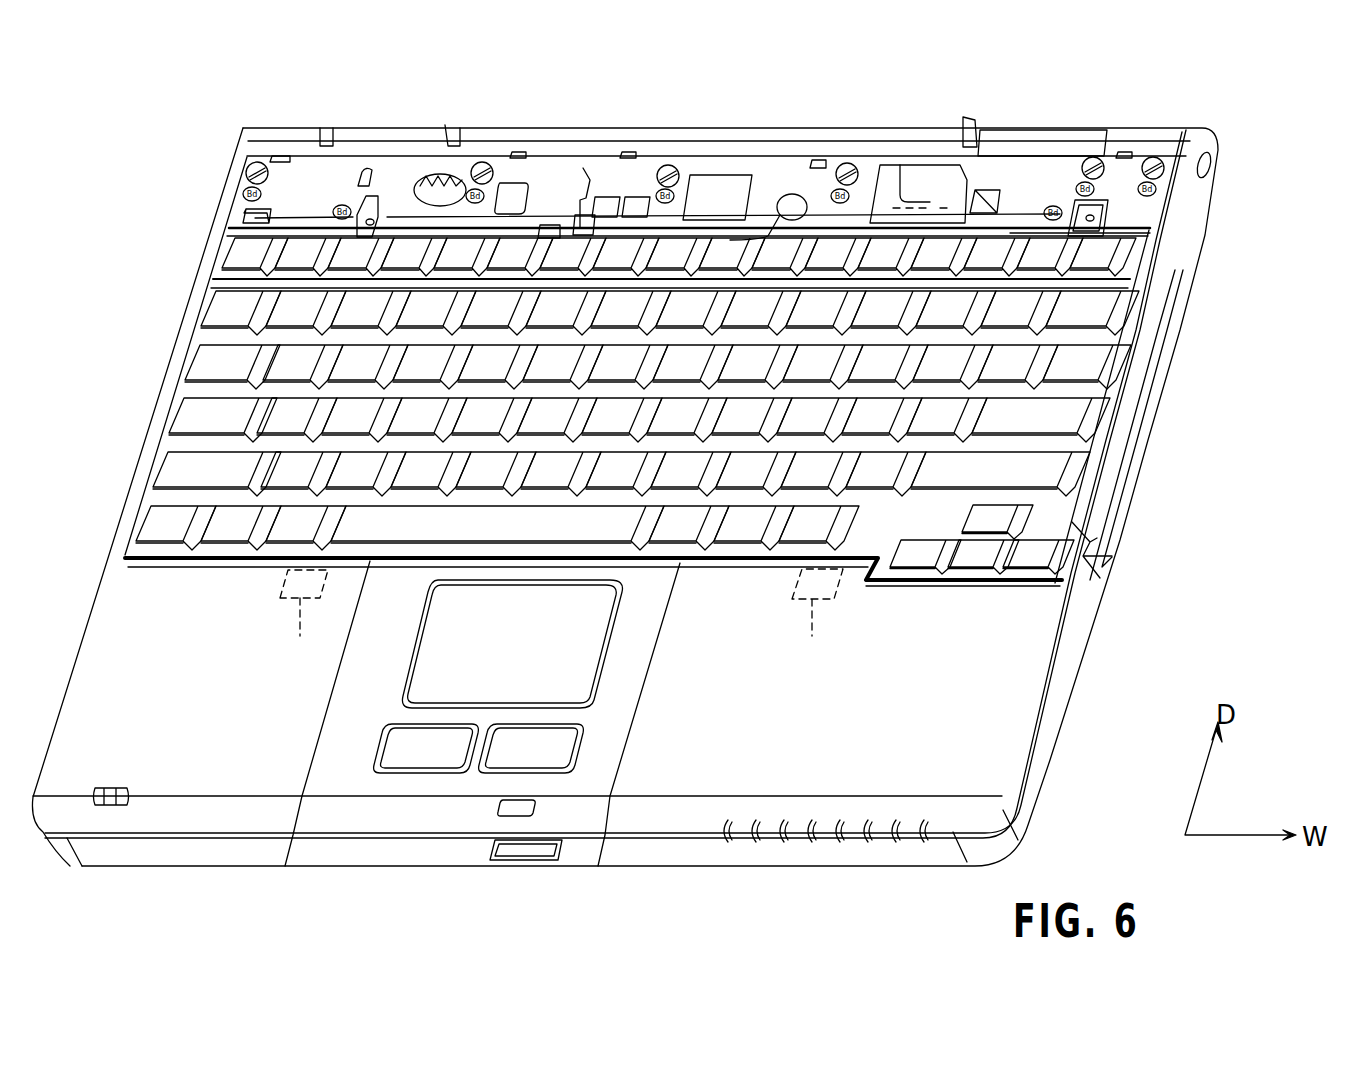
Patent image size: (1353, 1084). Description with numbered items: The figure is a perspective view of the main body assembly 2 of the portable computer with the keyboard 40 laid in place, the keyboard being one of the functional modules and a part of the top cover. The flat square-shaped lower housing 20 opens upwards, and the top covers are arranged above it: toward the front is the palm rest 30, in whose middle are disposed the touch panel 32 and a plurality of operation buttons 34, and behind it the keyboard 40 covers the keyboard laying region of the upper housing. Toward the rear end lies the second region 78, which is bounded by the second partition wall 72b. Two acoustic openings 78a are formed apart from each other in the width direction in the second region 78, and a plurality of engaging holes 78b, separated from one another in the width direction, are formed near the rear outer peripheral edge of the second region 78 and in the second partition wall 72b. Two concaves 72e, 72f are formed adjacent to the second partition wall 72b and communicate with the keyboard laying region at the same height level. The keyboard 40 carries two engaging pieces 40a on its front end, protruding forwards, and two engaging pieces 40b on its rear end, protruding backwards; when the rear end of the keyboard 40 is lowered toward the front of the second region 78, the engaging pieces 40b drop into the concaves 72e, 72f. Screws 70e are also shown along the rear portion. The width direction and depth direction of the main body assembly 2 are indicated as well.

The main body assembly 2 is at (111, 175).
The lower housing 20 is at (1166, 352).
The palm rest 30 is at (992, 695).
The touch panel 32 is at (573, 680).
The operation buttons 34 is at (508, 767).
The keyboard 40 is at (1073, 412).
The engaging pieces 40a is at (561, 620).
The engaging pieces 40b is at (353, 217).
The screws 70e is at (258, 164).
The second partition wall 72b is at (248, 233).
The concave 72e is at (1108, 208).
The concave 72f is at (372, 185).
The second region 78 is at (245, 211).
The acoustic openings 78a is at (430, 170).
The engaging holes 78b is at (288, 156).